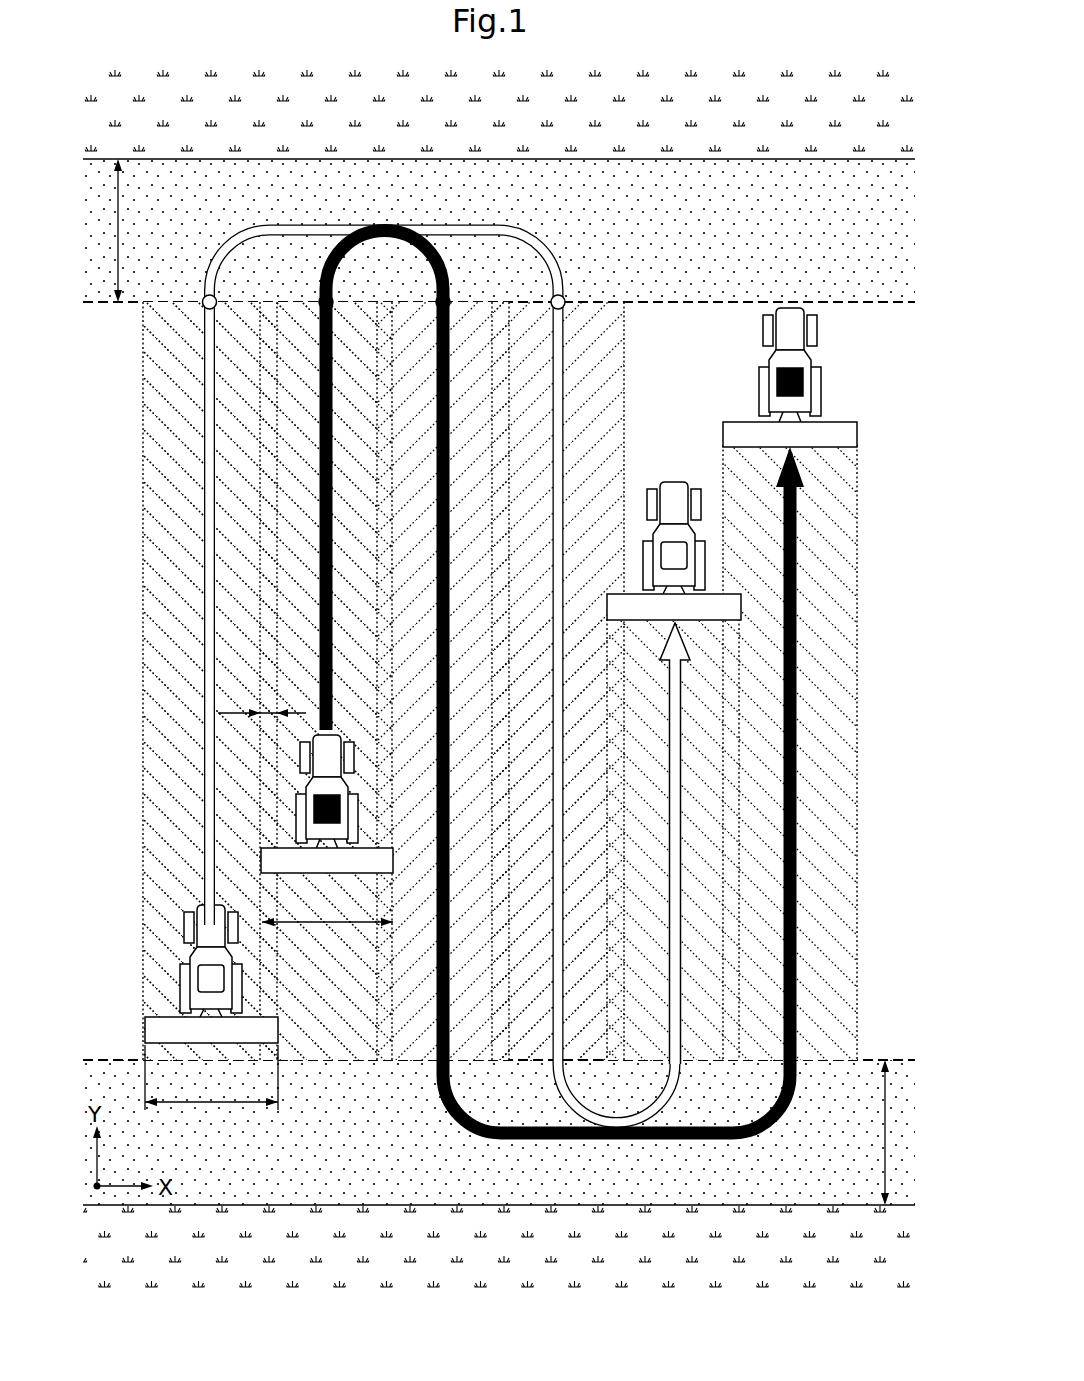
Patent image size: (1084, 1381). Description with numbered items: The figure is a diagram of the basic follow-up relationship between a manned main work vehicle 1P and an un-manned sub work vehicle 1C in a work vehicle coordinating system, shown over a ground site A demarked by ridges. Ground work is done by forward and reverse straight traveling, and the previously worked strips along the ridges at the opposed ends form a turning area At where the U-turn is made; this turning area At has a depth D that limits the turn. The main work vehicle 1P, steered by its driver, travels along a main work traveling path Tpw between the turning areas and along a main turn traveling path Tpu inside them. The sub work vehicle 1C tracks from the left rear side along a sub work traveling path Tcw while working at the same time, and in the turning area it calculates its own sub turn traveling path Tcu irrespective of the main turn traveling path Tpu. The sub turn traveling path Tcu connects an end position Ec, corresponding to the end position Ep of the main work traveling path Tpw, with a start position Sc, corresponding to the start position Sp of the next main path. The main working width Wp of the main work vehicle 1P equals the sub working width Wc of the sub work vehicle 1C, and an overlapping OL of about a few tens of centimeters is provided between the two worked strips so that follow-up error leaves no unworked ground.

The main work vehicle 1P is at (834, 363).
The sub work vehicle 1C is at (673, 470).
The field A is at (884, 670).
The turning area At is at (730, 232).
The sub turn traveling path Tcu is at (279, 224).
The sub work traveling path Tcw is at (574, 370).
The main turn traveling path Tpu is at (436, 291).
The main work traveling path Tpw is at (313, 441).
The end position of the sub work traveling path Ec is at (201, 302).
The end position of the main work traveling path Ep is at (318, 302).
The start position of the main work traveling path Sp is at (451, 302).
The start position of the sub work traveling path Sc is at (566, 302).
The depth of the turning area D is at (493, 682).
The overlapping OL is at (262, 700).
The main working width Wp is at (327, 912).
The sub working width Wc is at (211, 1077).